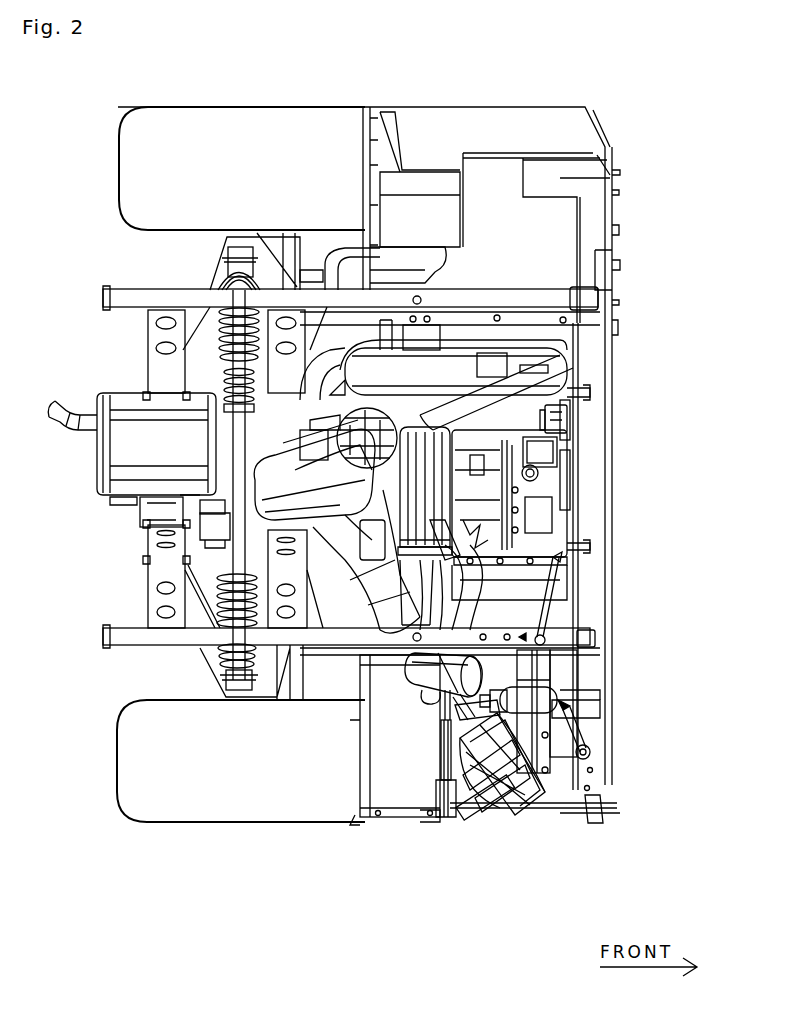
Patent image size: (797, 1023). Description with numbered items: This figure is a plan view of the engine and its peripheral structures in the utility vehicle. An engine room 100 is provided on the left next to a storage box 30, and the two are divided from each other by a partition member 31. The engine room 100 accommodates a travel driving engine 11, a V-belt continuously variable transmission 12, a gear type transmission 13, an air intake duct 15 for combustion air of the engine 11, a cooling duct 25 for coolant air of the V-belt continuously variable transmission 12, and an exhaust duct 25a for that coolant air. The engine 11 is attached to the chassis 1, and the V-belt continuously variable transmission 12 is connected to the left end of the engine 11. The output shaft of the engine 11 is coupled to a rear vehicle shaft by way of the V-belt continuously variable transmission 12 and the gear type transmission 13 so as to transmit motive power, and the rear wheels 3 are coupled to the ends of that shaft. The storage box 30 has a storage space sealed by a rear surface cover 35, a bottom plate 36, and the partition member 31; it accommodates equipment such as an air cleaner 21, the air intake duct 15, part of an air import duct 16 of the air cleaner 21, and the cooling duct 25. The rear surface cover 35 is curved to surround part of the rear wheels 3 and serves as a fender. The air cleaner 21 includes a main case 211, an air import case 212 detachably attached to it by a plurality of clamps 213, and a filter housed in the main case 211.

The chassis 1 is at (566, 278).
The rear wheels 3 is at (153, 821).
The travel driving engine 11 is at (545, 471).
The V-belt continuously variable transmission 12 is at (463, 365).
The gear type transmission 13 is at (333, 292).
The air intake duct 15 is at (422, 609).
The air import duct 16 is at (557, 692).
The air cleaner 21 is at (343, 870).
The cooling duct 25 is at (327, 570).
The exhaust duct 25a is at (292, 527).
The storage box 30 is at (560, 712).
The partition member 31 is at (582, 640).
The rear surface cover 35 is at (392, 790).
The bottom plate 36 is at (480, 790).
The engine room 100 is at (565, 423).
The main case 211 is at (440, 715).
The air import case 212 is at (470, 770).
The clamps 213 is at (450, 737).